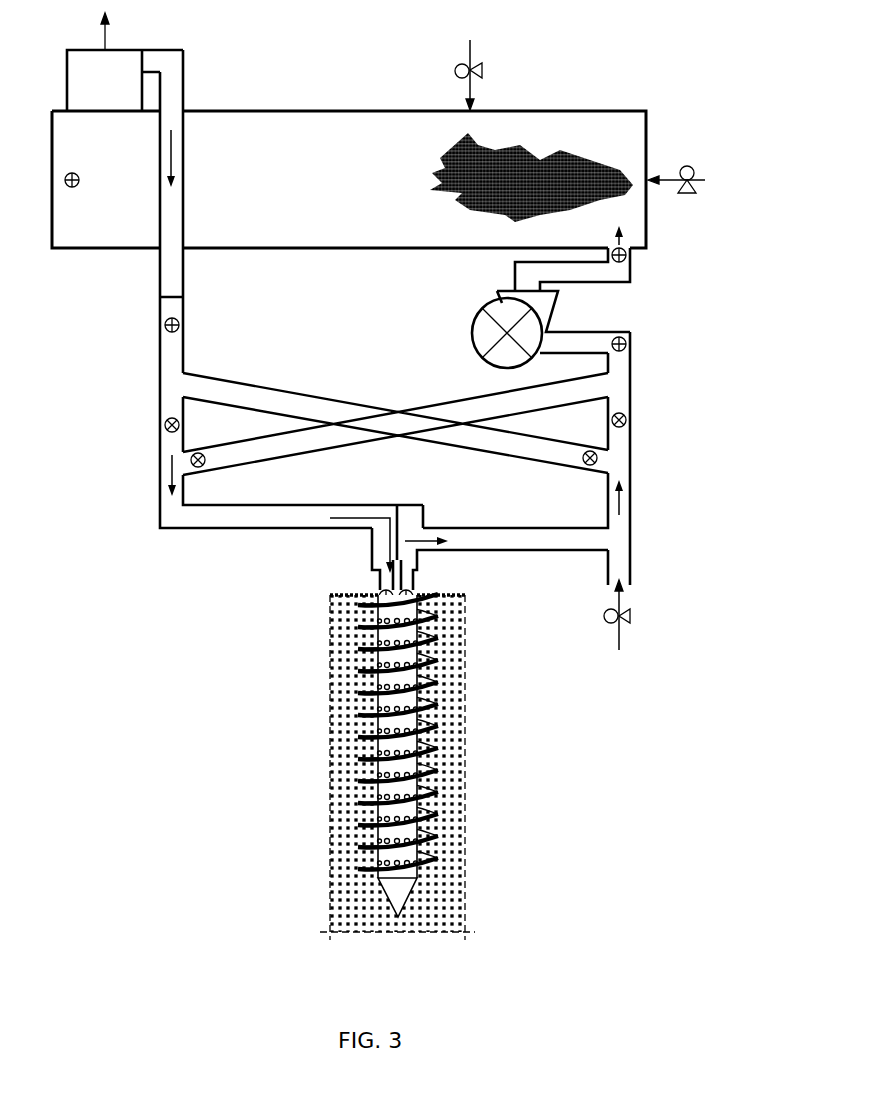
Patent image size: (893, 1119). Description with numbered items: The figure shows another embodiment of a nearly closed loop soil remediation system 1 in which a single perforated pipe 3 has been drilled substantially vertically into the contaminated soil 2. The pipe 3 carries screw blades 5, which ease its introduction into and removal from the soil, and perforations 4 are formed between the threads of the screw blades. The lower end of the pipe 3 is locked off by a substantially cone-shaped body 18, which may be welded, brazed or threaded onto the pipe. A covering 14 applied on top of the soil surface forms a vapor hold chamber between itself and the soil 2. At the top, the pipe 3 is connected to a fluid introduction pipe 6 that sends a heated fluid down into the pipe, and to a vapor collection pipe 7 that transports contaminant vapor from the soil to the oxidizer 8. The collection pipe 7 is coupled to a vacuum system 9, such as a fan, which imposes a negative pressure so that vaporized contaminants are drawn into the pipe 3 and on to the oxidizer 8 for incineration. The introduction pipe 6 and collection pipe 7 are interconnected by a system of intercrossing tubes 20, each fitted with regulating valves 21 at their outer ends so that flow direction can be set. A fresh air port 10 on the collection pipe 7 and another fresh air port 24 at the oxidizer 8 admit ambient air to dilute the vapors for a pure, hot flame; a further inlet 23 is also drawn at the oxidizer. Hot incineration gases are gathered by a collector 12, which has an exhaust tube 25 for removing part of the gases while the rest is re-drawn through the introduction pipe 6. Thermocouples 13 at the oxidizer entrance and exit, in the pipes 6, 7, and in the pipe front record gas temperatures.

The soil remediation system 1 is at (707, 73).
The contaminated soil 2 is at (345, 763).
The perforated pipe 3 is at (432, 702).
The perforations 4 is at (432, 767).
The screw blades 5 is at (375, 832).
The fluid introduction pipe 6 is at (158, 380).
The vapor collection pipe 7 is at (633, 505).
The oxidizer 8 is at (313, 130).
The vacuum system 9 is at (475, 336).
The fresh air port 10 is at (622, 642).
The collector 12 is at (75, 78).
The thermocouples 13 is at (74, 170).
The covering 14 is at (330, 596).
The cone-shaped body 18 is at (398, 897).
The system of tubes 20 is at (262, 394).
The regulating valve 21 is at (668, 413).
The inlet valve 23 is at (468, 50).
The fresh air port 24 is at (700, 176).
The exhaust tube 25 is at (103, 38).